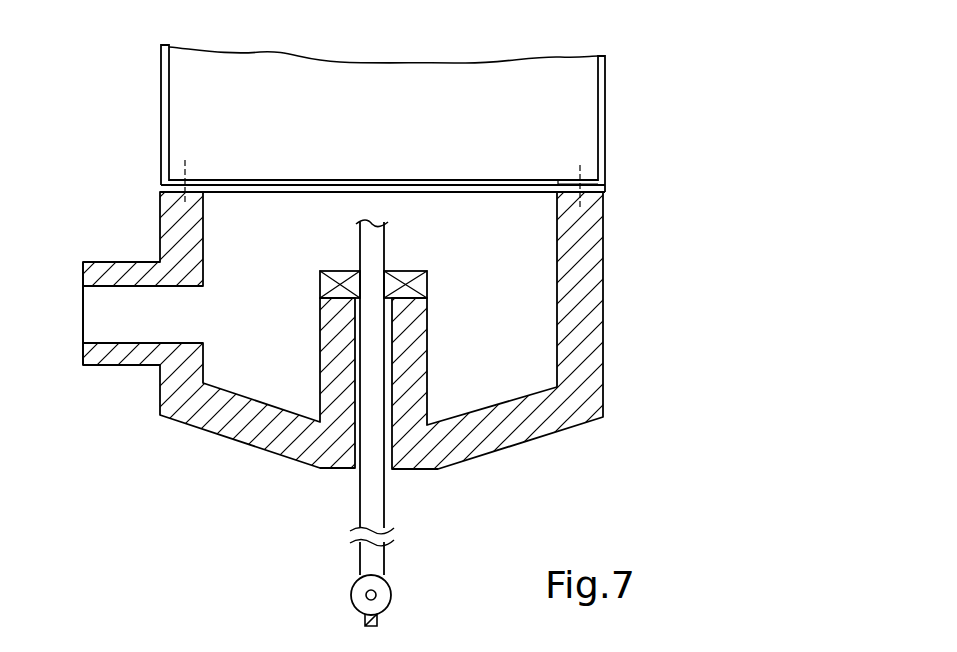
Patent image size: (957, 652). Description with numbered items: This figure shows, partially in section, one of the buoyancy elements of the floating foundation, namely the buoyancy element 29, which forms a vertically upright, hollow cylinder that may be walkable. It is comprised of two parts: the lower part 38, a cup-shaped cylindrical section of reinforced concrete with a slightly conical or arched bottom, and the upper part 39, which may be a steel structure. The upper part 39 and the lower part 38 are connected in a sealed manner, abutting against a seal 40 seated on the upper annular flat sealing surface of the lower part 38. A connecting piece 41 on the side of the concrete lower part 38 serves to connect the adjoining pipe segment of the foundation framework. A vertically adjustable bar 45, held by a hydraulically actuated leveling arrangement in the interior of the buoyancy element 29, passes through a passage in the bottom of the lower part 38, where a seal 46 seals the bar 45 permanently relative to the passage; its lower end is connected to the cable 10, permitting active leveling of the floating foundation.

The cable 10 is at (380, 617).
The buoyancy element 29 is at (645, 171).
The lower part of buoyancy element 38 is at (589, 271).
The upper part of buoyancy element 39 is at (606, 89).
The seal 40 is at (210, 188).
The connecting piece 41 is at (112, 355).
The bar 45 is at (372, 248).
The seal 46 is at (418, 287).